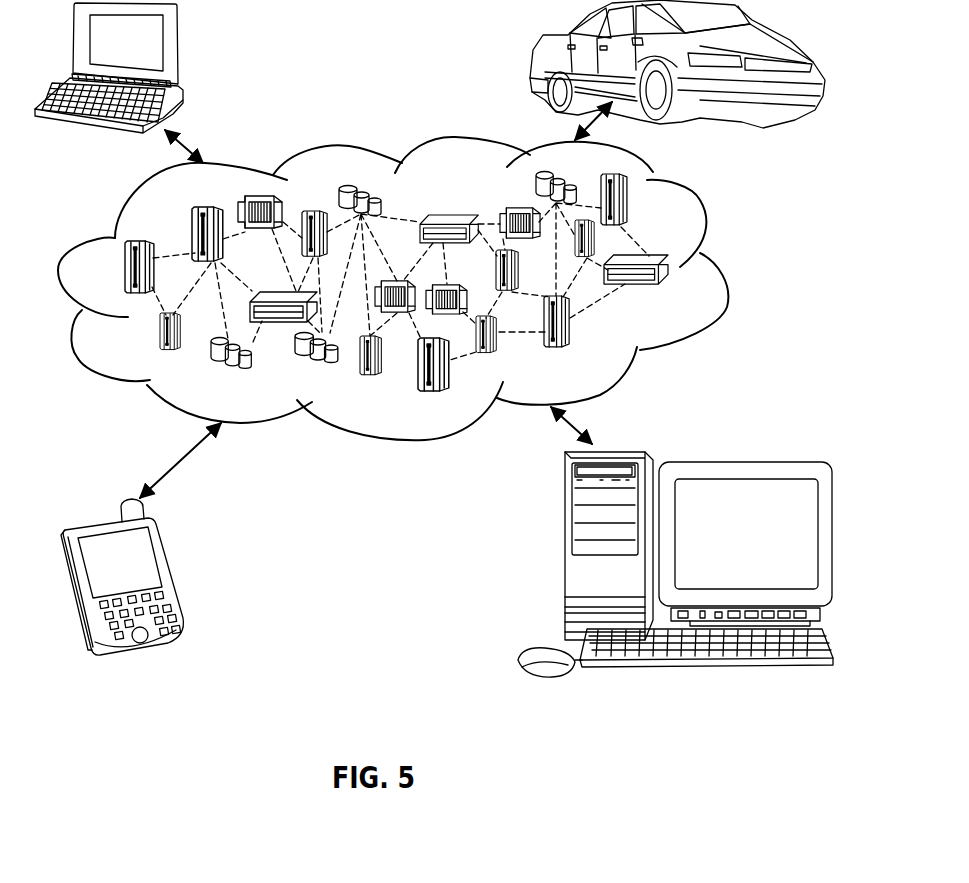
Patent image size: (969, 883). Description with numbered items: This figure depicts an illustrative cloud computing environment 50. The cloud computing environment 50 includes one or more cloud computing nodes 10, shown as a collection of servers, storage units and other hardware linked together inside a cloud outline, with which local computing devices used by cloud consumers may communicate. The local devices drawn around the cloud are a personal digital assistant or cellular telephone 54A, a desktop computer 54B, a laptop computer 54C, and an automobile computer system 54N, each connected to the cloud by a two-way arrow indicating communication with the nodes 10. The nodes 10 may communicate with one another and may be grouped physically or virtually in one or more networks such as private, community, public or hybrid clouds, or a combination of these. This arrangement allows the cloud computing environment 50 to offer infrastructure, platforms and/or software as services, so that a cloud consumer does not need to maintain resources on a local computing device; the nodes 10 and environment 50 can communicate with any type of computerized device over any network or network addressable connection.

The cloud computing environment 50 is at (710, 231).
The cloud computing node 10 is at (690, 289).
The personal digital assistant or cellular telephone 54A is at (170, 573).
The desktop computer 54B is at (566, 555).
The laptop computer 54C is at (177, 47).
The automobile computer system 54N is at (540, 52).